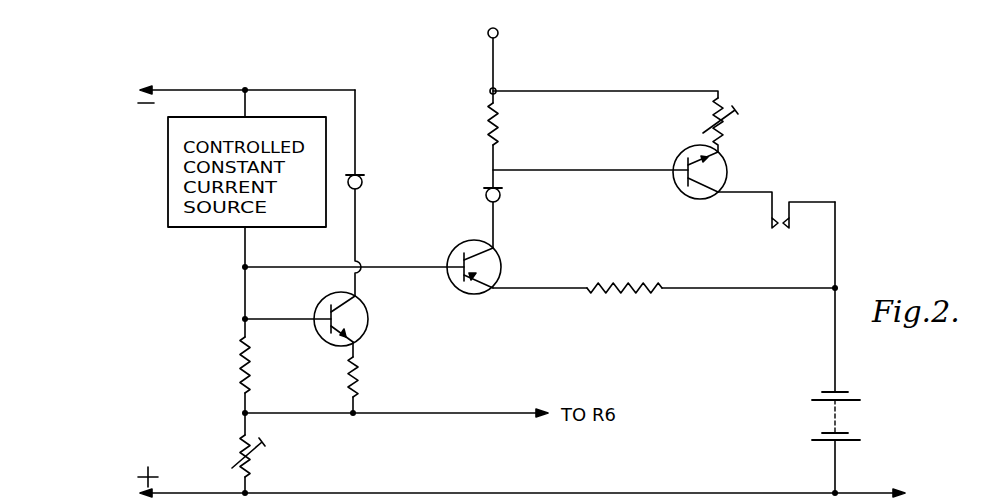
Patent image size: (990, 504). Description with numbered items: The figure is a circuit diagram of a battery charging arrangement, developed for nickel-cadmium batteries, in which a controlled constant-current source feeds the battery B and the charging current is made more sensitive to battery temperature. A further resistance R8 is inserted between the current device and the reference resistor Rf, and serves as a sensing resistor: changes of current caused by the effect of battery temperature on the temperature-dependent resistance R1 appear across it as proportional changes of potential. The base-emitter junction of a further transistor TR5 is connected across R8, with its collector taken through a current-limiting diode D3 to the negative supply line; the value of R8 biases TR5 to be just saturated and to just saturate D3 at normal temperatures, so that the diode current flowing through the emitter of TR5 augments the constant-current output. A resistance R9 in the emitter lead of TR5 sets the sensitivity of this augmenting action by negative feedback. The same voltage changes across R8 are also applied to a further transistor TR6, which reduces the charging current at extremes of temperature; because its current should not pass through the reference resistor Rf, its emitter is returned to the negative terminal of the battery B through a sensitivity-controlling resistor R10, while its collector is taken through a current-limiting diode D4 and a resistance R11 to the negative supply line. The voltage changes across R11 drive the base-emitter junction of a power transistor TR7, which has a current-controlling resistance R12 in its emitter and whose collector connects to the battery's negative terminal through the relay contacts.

The current-limiting diode D3 is at (372, 183).
The current-limiting diode D4 is at (510, 195).
The further transistor TR5 is at (328, 319).
The further transistor TR6 is at (496, 267).
The power transistor TR7 is at (721, 172).
The further resistance R8 is at (261, 365).
The resistance R9 is at (370, 377).
The sensitivity-controlling resistor R10 is at (624, 276).
The resistance R11 is at (514, 124).
The current-controlling resistance R12 is at (740, 125).
The reference resistor Rf is at (230, 456).
The temperature-dependent resistance R1 is at (772, 215).
The battery B is at (847, 416).